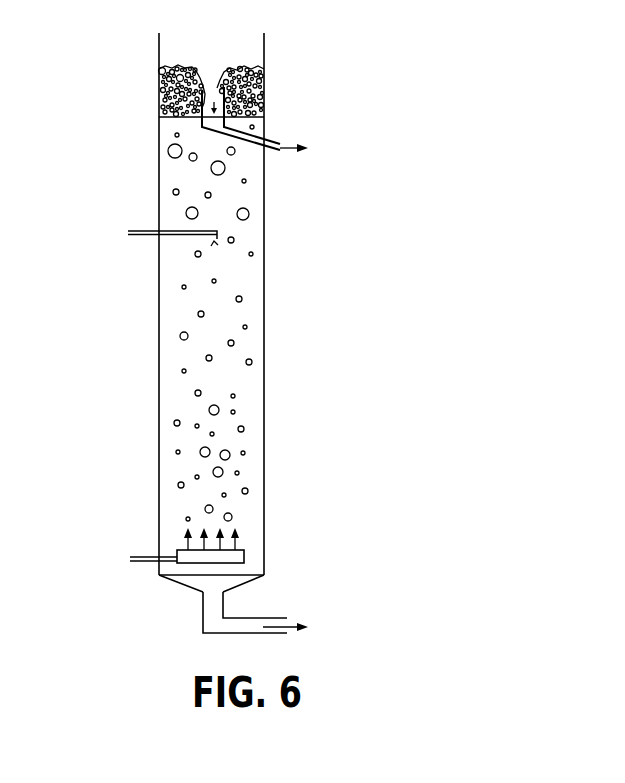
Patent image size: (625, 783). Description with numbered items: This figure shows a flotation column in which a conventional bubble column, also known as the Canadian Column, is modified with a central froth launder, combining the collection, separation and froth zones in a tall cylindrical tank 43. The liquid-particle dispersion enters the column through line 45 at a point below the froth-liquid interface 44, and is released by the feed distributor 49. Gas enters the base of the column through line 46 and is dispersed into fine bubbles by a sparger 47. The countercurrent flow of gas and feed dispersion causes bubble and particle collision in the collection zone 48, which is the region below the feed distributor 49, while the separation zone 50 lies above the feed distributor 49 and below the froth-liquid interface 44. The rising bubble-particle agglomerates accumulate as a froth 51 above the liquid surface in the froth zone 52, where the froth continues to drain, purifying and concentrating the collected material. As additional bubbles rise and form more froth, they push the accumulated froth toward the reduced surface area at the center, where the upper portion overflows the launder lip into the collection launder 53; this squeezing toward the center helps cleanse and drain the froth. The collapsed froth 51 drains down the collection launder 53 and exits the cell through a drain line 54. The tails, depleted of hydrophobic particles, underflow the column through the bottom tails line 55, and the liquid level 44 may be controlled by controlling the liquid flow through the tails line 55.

The cylindrical tank 43 is at (159, 375).
The froth-liquid interface 44 is at (159, 117).
The line 45 is at (142, 236).
The line 46 is at (142, 553).
The sparger 47 is at (245, 552).
The collection zone 48 is at (215, 389).
The feed distributor 49 is at (214, 243).
The separation zone 50 is at (215, 182).
The froth 51 is at (232, 63).
The froth zone 52 is at (260, 82).
The collection launder 53 is at (193, 90).
The drain line 54 is at (270, 155).
The tails line 55 is at (242, 625).